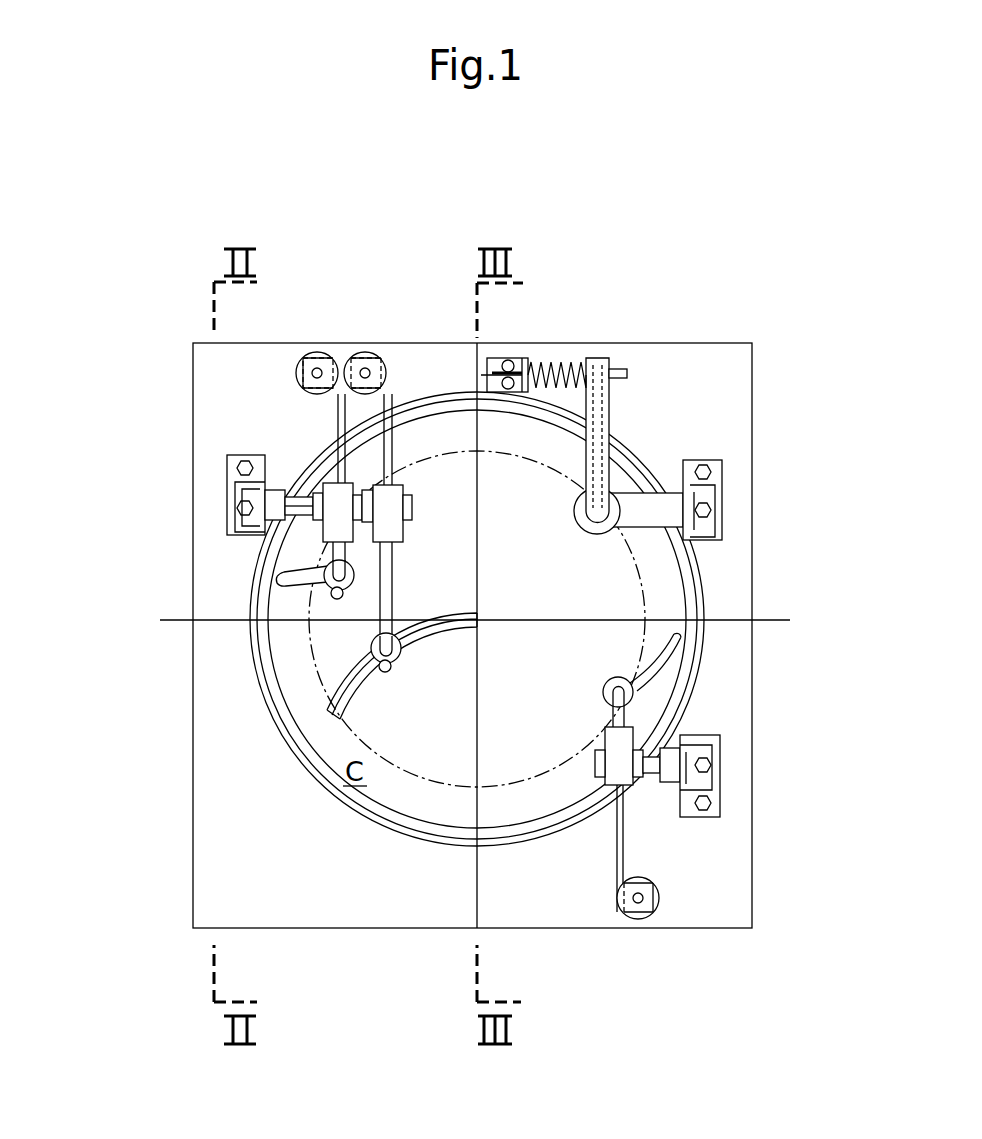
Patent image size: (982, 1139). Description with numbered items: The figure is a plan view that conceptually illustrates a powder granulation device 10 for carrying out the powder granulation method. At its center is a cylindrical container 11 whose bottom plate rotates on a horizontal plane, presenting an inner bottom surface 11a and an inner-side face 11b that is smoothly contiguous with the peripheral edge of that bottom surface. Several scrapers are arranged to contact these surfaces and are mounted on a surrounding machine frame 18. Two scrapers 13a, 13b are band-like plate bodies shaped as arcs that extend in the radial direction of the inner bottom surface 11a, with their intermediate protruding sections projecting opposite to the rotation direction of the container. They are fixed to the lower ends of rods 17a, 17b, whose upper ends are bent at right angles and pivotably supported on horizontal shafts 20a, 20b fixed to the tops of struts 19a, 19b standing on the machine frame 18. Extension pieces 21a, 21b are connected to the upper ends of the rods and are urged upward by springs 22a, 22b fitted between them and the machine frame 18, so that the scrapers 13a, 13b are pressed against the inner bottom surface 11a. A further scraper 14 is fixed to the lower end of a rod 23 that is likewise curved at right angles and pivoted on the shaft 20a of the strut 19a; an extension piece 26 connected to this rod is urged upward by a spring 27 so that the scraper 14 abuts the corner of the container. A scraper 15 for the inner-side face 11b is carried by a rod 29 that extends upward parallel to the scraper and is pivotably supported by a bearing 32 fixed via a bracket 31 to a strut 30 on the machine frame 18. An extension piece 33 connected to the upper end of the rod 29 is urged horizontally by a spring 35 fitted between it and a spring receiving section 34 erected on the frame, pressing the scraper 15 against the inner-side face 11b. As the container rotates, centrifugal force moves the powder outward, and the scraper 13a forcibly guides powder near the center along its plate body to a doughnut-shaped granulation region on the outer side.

The powder granulation device 10 is at (188, 350).
The cylindrical container 11 is at (699, 595).
The inner bottom surface 11a is at (534, 703).
The inner-side face 11b is at (394, 800).
The scraper 13a is at (441, 629).
The scraper 13b is at (652, 667).
The scraper 14 is at (292, 589).
The scraper 15 is at (634, 452).
The rod 17a is at (388, 609).
The rod 17b is at (612, 710).
The machine frame 18 is at (266, 890).
The strut 19a is at (229, 491).
The strut 19b is at (722, 747).
The shaft 20a is at (300, 498).
The shaft 20b is at (652, 786).
The extension piece 21a is at (394, 440).
The extension piece 21b is at (617, 836).
The spring 22a is at (368, 351).
The spring 22b is at (627, 920).
The rod 23 is at (337, 556).
The extension piece 26 is at (337, 412).
The spring 27 is at (317, 351).
The rod 29 is at (583, 528).
The strut 30 is at (723, 481).
The bracket 31 is at (650, 523).
The bearing 32 is at (575, 500).
The extension piece 33 is at (598, 424).
The spring receiving section 34 is at (520, 359).
The spring 35 is at (560, 360).